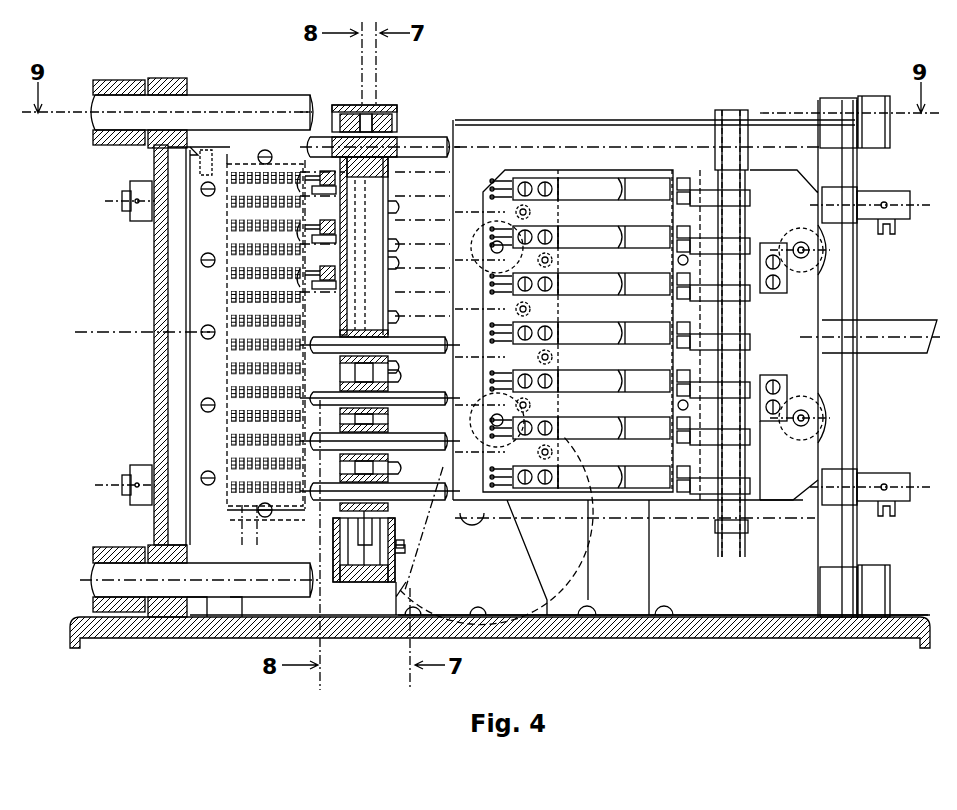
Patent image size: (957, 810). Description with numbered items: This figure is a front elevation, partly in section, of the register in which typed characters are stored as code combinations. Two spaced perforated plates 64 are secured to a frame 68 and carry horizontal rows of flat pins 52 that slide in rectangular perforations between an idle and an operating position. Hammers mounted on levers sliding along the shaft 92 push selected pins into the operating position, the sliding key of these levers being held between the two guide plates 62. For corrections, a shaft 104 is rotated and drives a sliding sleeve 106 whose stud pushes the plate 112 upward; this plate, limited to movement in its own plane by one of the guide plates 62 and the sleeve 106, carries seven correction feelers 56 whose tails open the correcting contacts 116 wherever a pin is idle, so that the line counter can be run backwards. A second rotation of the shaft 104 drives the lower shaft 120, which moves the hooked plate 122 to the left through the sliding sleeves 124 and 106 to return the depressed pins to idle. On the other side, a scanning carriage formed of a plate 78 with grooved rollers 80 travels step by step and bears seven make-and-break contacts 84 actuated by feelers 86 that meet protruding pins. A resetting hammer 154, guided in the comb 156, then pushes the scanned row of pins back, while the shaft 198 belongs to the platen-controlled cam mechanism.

The flat pins 52 is at (235, 486).
The correction feelers 56 is at (330, 240).
The guide plates 62 is at (334, 553).
The perforated plates 64 is at (235, 452).
The frame 68 is at (70, 630).
The plate of scanning carriage 78 is at (660, 503).
The grooved rollers 80 is at (820, 250).
The make-and-break contacts 84 is at (600, 183).
The feelers 86 is at (745, 200).
The shaft 92 is at (320, 407).
The shaft 104 is at (412, 146).
The sliding sleeve 106 is at (351, 112).
The plate 112 is at (338, 320).
The correcting contacts 116 is at (322, 222).
The lower shaft 120 is at (318, 530).
The plate 122 is at (390, 248).
The sliding sleeve 124 is at (409, 537).
The resetting hammer 154 is at (758, 489).
The comb 156 is at (768, 421).
The shaft 198 is at (95, 573).